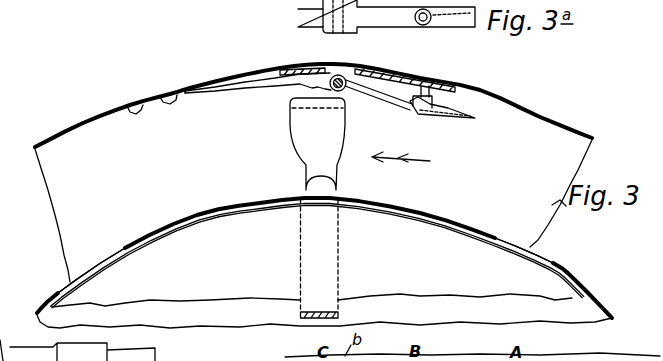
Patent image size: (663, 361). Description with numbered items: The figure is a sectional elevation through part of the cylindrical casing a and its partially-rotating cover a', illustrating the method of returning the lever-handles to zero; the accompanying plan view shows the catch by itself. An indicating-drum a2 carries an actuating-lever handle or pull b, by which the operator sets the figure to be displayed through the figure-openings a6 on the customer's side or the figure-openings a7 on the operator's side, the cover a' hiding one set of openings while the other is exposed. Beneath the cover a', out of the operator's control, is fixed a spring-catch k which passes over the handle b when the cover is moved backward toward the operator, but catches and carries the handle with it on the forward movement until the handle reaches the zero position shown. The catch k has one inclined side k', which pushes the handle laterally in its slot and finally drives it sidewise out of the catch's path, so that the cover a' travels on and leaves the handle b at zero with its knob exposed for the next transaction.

In FIG. 3, the casing a is at (324, 255).
In FIG. 3, the partially-rotating cover a' is at (313, 105).
In FIG. 3, the indicating-drum a2 is at (317, 255).
In FIG. 3, the figure-openings a6 is at (84, 270).
In FIG. 3, the figure-openings a7 is at (526, 248).
In FIG. 3, the actuating-lever handle b is at (317, 208).
In FIG. 3a, the spring-catch k is at (342, 29).
In FIG. 3, the spring-catch k is at (320, 95).
In FIG. 3a, the inclined side of catch k' is at (421, 17).
In FIG. 3, the inclined side of catch k' is at (442, 118).